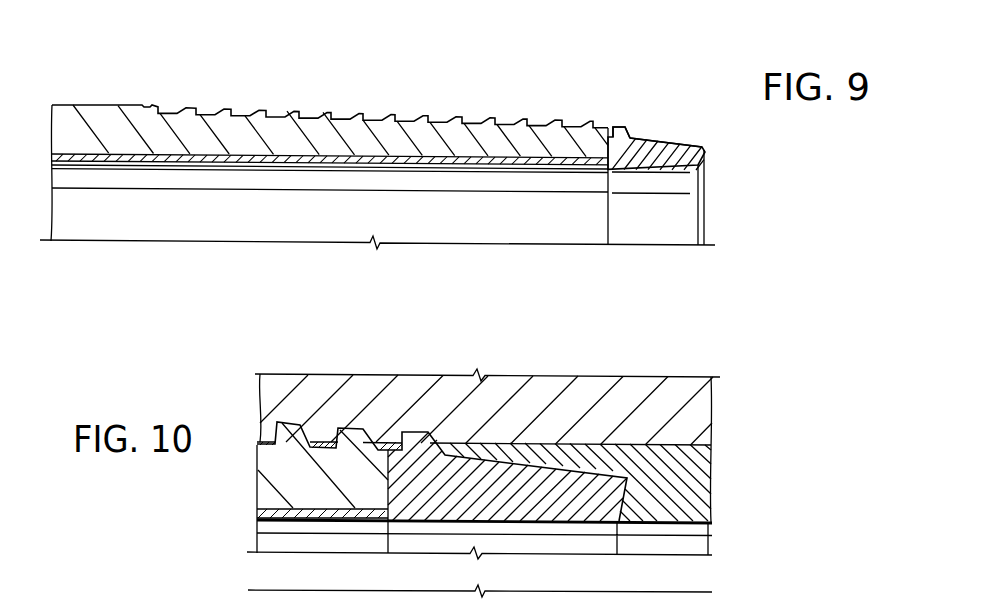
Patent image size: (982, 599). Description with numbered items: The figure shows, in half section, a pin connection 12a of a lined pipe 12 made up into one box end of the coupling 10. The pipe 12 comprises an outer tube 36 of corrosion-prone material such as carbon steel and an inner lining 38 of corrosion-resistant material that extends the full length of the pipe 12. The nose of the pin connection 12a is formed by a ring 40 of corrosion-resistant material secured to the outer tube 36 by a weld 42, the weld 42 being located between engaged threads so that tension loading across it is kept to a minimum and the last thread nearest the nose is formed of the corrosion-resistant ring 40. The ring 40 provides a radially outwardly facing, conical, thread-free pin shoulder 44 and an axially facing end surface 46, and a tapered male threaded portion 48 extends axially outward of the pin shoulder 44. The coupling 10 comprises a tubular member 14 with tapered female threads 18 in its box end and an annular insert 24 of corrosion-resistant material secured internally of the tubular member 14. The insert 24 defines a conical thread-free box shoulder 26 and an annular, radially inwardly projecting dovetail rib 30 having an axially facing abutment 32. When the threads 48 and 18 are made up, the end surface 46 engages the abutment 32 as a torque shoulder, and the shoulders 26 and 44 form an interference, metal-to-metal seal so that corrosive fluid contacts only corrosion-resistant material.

In FIG. 10, the coupling 10 is at (697, 363).
In FIG. 9, the pipe 12 is at (245, 78).
In FIG. 10, the pipe 12 is at (240, 472).
In FIG. 9, the pin connection 12a is at (163, 95).
In FIG. 10, the pin connection 12a is at (273, 493).
In FIG. 10, the tubular member 14 is at (370, 387).
In FIG. 10, the tapered female threads 18 is at (325, 440).
In FIG. 10, the annular insert 24 is at (727, 473).
In FIG. 10, the first conical thread-free box shoulder 26 is at (503, 466).
In FIG. 10, the rib 30 is at (688, 523).
In FIG. 10, the first annular axially facing abutment 32 is at (613, 505).
In FIG. 10, the outer tube 36 is at (260, 462).
In FIG. 9, the lining 38 is at (390, 162).
In FIG. 10, the lining 38 is at (287, 515).
In FIG. 9, the ring 40 is at (647, 150).
In FIG. 10, the ring 40 is at (443, 503).
In FIG. 9, the weld 42 is at (622, 130).
In FIG. 9, the pin shoulder 44 is at (683, 140).
In FIG. 10, the pin shoulder 44 is at (578, 477).
In FIG. 9, the end surface 46 is at (703, 165).
In FIG. 10, the end surface 46 is at (630, 493).
In FIG. 9, the tapered male threaded portion 48 is at (322, 112).
In FIG. 10, the tapered male threaded portion 48 is at (367, 598).